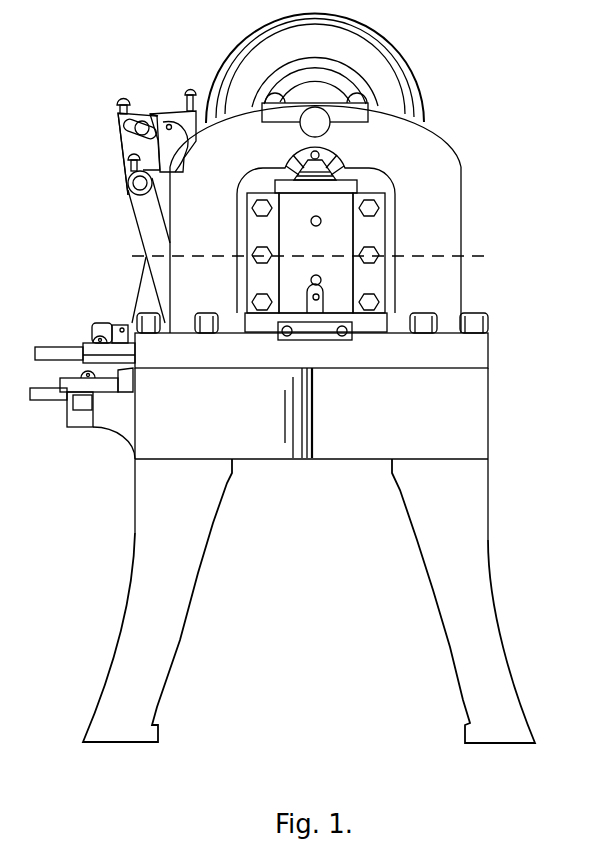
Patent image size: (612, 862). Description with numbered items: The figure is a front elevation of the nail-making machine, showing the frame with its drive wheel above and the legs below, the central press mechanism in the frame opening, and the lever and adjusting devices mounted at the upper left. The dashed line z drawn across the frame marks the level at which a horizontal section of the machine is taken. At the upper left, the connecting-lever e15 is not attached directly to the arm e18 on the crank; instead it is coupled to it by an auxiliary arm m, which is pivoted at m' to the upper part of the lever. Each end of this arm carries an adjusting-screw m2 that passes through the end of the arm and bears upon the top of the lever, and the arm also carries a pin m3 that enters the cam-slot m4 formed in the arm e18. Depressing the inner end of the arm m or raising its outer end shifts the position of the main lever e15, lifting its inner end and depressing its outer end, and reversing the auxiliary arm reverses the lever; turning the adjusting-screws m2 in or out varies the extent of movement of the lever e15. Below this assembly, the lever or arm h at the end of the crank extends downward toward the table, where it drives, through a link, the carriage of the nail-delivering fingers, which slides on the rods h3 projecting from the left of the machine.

The adjusting-screw m2 is at (162, 88).
The pivot m' is at (173, 128).
The arm m is at (165, 107).
The cam-slot m4 is at (112, 115).
The pin m3 is at (122, 143).
The arm on the crank e18 is at (127, 136).
The connecting-lever e15 is at (174, 147).
The lever or arm h is at (149, 247).
The rods h3 is at (85, 344).
The section line z is at (311, 256).